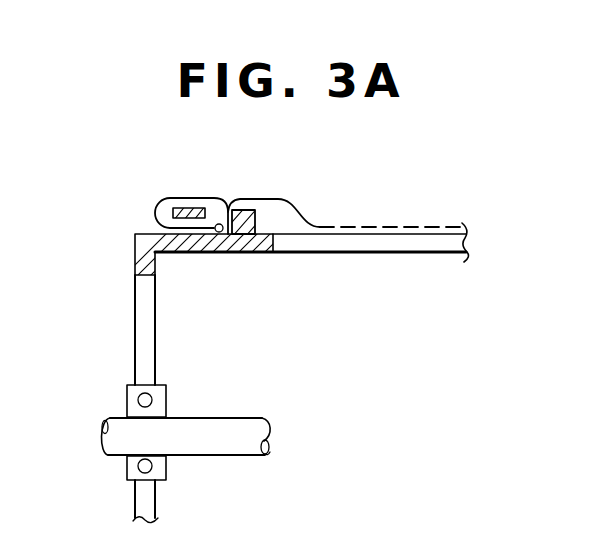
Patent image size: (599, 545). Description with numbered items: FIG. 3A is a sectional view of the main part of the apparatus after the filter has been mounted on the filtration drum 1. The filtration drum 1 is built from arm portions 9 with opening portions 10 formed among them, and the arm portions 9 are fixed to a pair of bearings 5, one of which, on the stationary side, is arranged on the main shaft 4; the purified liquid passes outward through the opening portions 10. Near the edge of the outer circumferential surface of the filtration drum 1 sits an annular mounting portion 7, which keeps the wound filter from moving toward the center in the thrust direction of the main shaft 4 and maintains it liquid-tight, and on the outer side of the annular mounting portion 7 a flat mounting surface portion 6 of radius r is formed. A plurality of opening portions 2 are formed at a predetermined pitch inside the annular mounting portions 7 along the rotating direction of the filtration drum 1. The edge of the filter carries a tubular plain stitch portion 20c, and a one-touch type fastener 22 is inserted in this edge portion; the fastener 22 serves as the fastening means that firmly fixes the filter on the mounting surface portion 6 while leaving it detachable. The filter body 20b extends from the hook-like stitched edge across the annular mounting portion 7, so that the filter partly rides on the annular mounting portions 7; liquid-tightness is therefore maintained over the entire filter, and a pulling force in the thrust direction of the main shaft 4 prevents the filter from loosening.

The filtration drum 1 is at (100, 352).
The opening portions 2 is at (433, 238).
The main shaft 4 is at (145, 437).
The bearings 5 is at (128, 398).
The mounting surface portions 6 is at (217, 233).
The annular mounting portions 7 is at (257, 222).
The arm portions 9 is at (135, 279).
The opening portions 10 is at (145, 330).
The spring strip 20b is at (395, 227).
The tubular plain stitch portions 20c is at (222, 199).
The one-touch type fastener 22 is at (186, 209).